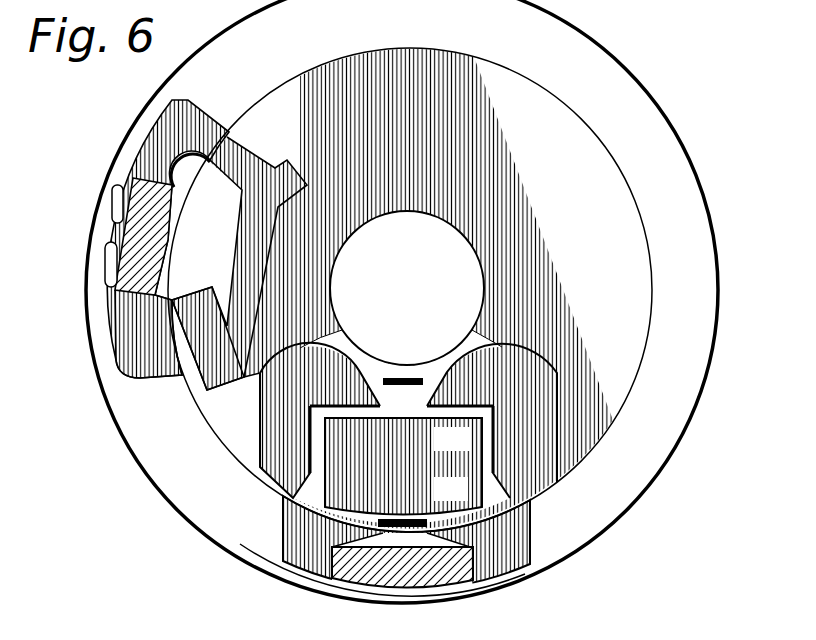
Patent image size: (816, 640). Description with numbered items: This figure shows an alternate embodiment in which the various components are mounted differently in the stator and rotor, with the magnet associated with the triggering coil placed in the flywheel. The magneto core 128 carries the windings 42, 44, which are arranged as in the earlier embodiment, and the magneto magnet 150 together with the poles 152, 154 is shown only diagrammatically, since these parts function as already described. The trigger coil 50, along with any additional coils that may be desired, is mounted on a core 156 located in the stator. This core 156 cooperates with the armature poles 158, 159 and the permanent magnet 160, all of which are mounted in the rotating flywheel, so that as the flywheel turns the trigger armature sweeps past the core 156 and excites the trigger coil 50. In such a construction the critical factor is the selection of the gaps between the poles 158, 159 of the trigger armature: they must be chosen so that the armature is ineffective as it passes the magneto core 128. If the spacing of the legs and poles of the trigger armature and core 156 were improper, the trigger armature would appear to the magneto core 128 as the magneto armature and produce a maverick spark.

The winding 42 is at (461, 457).
The winding 44 is at (461, 503).
The trigger coil 50 is at (207, 396).
The magneto core 128 is at (505, 346).
The magneto magnet 150 is at (412, 590).
The pole 152 is at (525, 580).
The pole 154 is at (303, 583).
The core 156 is at (267, 238).
The armature pole 158 is at (153, 143).
The armature pole 159 is at (130, 345).
The permanent magnet 160 is at (133, 235).